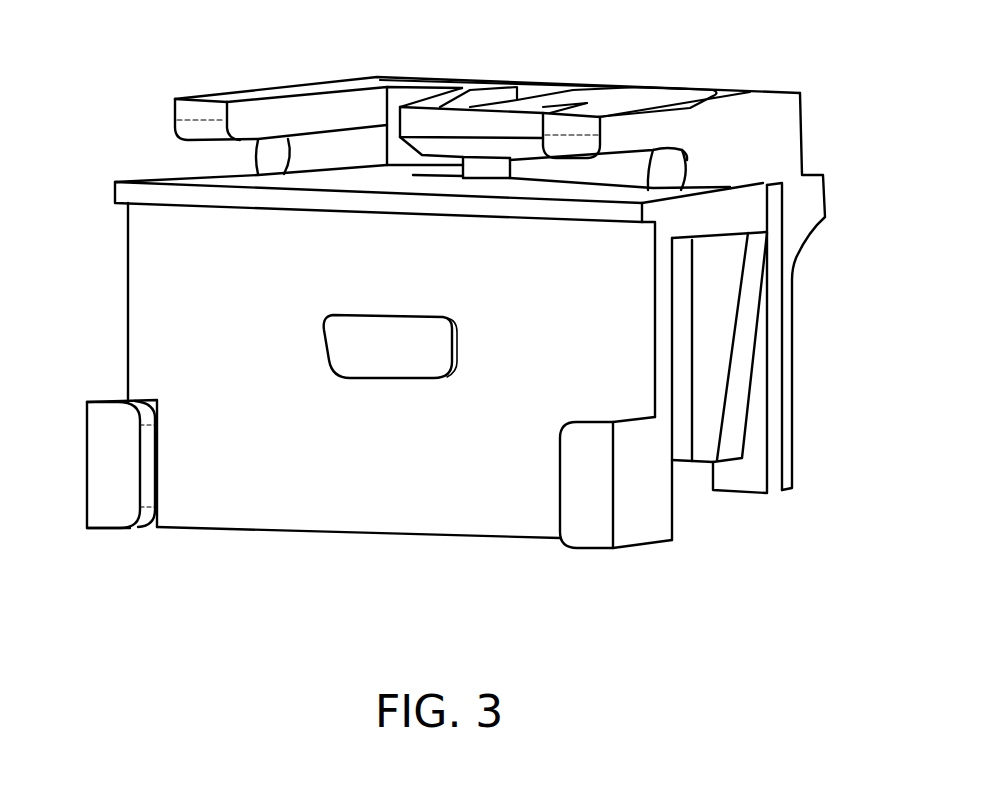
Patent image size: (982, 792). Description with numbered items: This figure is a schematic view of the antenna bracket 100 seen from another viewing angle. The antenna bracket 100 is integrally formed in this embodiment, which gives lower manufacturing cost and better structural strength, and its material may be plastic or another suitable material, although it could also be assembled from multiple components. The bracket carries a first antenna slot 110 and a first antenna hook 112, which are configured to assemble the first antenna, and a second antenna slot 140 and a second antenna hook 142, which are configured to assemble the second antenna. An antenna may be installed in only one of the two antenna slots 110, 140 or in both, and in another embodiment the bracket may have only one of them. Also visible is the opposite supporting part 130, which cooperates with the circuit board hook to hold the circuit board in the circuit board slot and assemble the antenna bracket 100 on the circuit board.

The antenna bracket 100 is at (858, 618).
The first antenna slot 110 is at (519, 516).
The first antenna hook 112 is at (400, 347).
The opposite supporting part 130 is at (777, 420).
The second antenna slot 140 is at (253, 155).
The second antenna hook 142 is at (487, 148).